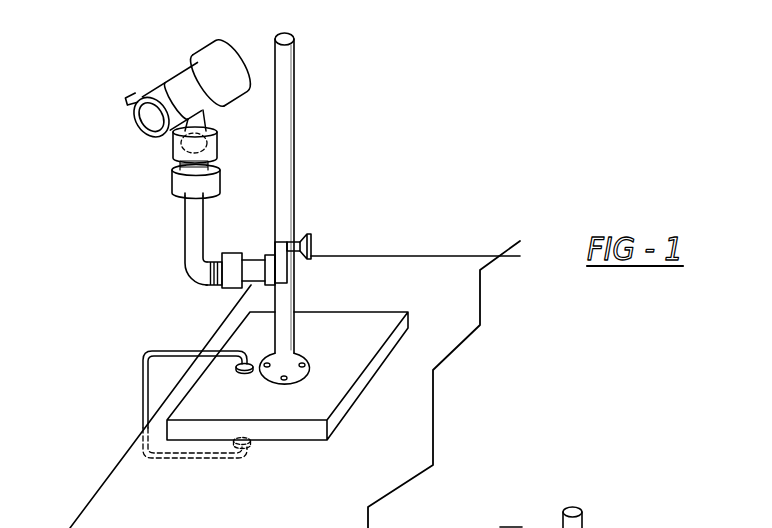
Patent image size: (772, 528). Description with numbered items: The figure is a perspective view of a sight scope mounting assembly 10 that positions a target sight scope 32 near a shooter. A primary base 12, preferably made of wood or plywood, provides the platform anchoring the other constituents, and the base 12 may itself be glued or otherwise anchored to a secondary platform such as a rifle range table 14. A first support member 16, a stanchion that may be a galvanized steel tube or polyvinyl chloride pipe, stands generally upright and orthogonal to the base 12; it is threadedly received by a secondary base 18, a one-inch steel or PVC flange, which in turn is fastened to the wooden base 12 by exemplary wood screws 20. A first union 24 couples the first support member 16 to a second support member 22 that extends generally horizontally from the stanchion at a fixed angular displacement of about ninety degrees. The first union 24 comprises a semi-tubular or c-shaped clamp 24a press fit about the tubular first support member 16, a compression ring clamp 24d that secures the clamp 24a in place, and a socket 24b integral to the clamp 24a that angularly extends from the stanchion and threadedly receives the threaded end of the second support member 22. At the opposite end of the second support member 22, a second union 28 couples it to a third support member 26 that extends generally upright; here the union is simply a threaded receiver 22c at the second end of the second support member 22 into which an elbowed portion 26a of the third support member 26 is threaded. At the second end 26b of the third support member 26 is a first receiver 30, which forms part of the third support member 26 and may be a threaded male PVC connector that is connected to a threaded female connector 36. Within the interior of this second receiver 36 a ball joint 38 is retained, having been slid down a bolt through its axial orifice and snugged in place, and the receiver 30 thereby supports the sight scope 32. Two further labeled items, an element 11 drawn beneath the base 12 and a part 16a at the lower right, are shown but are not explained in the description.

The sight scope mounting assembly 10 is at (100, 67).
The bracket 11 is at (143, 383).
The base 12 is at (357, 330).
The rifle range table 14 is at (467, 269).
The first support member 16 is at (294, 120).
The pole lower section 16a is at (615, 527).
The secondary base 18 is at (304, 376).
The wood screws 20 is at (284, 381).
The second support member 22 is at (255, 251).
The threaded receiver 22c is at (218, 289).
The first union 24 is at (277, 285).
The semi-tubular clamp 24a is at (278, 242).
The socket 24b is at (260, 277).
The compression ring clamp 24d is at (311, 243).
The third support member 26 is at (182, 220).
The elbowed portion 26a is at (138, 272).
The second end 26b is at (180, 200).
The second union 28 is at (212, 256).
The first receiver 30 is at (172, 176).
The target sight scope 32 is at (192, 80).
The threaded female connector 36 is at (210, 145).
The ball joint 38 is at (213, 128).